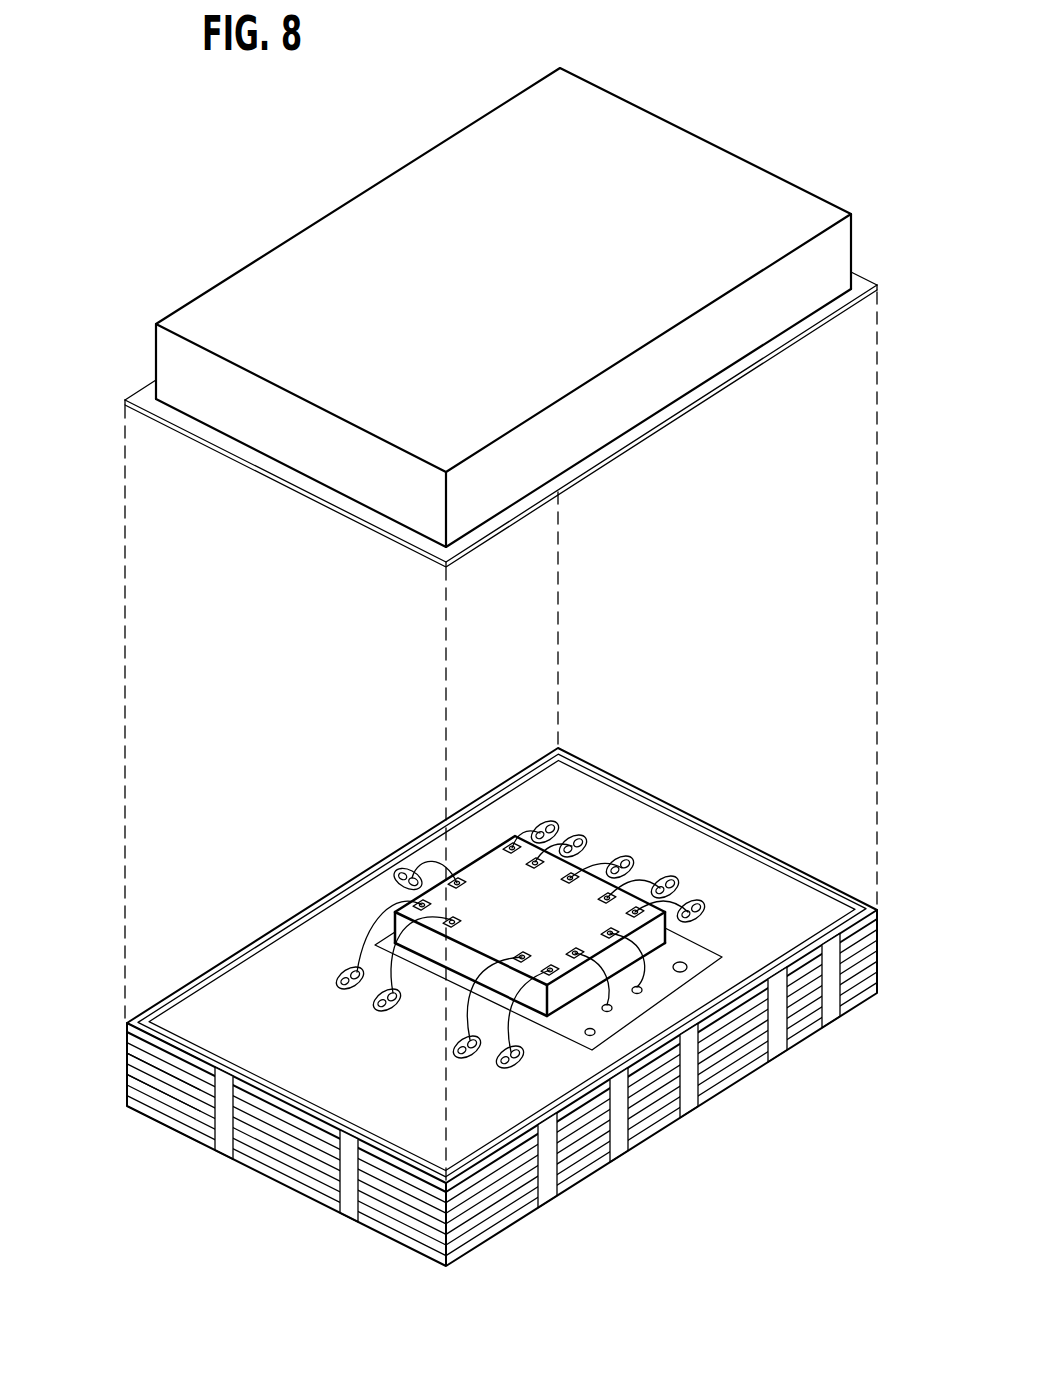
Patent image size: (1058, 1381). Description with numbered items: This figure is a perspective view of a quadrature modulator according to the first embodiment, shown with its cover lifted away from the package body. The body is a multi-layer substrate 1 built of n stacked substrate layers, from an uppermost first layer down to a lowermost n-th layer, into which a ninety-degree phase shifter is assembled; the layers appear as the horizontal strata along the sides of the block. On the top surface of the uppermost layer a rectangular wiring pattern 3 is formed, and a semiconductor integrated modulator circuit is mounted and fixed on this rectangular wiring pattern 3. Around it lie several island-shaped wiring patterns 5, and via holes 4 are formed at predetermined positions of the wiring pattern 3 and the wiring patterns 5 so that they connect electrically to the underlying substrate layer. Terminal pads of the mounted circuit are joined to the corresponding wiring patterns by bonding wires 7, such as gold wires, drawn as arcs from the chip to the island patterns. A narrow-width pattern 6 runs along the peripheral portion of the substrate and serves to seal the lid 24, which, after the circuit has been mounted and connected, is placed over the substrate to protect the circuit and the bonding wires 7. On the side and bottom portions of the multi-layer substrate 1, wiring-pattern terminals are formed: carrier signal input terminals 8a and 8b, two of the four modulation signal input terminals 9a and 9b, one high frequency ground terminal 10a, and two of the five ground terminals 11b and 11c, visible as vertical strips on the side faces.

The multi-layer substrate 1 is at (687, 843).
The rectangular wiring pattern 3 is at (722, 958).
The via holes 4 is at (394, 866).
The island-shaped wiring patterns 5 is at (388, 882).
The narrow-width pattern 6 is at (187, 995).
The bonding wire 7 is at (520, 843).
The carrier signal input terminal 8a is at (226, 1152).
The carrier signal input terminal 8b is at (347, 1222).
The input terminal for modulation signals 9a is at (780, 1060).
The input terminal for modulation signals 9b is at (837, 1022).
The high frequency ground terminal 10a is at (543, 1208).
The ground terminal 11b is at (692, 1112).
The ground terminal 11c is at (622, 1157).
The lid 24 is at (845, 251).